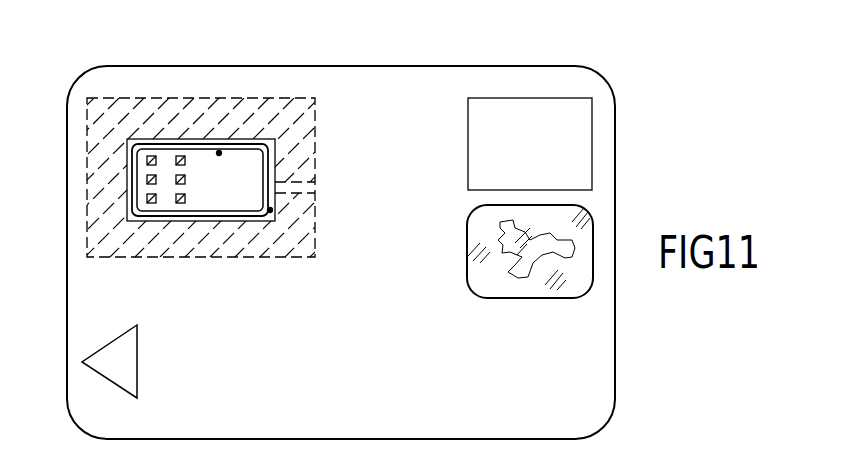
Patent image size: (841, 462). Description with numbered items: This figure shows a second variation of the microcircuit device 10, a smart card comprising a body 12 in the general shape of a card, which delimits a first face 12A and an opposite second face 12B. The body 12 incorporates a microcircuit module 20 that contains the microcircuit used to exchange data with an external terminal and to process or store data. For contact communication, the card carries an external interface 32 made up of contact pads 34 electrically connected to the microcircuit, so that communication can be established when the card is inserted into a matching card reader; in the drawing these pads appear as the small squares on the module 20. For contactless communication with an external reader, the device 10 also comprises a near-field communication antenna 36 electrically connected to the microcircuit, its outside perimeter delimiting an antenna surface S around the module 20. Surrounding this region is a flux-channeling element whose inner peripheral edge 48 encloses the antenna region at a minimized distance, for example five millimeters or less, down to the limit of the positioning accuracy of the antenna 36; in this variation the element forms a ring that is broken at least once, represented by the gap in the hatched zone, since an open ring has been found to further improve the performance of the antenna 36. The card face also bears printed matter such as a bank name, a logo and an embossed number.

The microcircuit device 10 is at (335, 225).
The body 12 is at (595, 358).
The first face 12A is at (602, 322).
The second face 12B is at (422, 97).
The microcircuit module 20 is at (194, 130).
The external interface 32 is at (142, 179).
The contact pads 34 is at (142, 210).
The near-field communication antenna 36 is at (207, 139).
The inner peripheral edge 48 is at (141, 223).
The antenna surface S is at (236, 180).